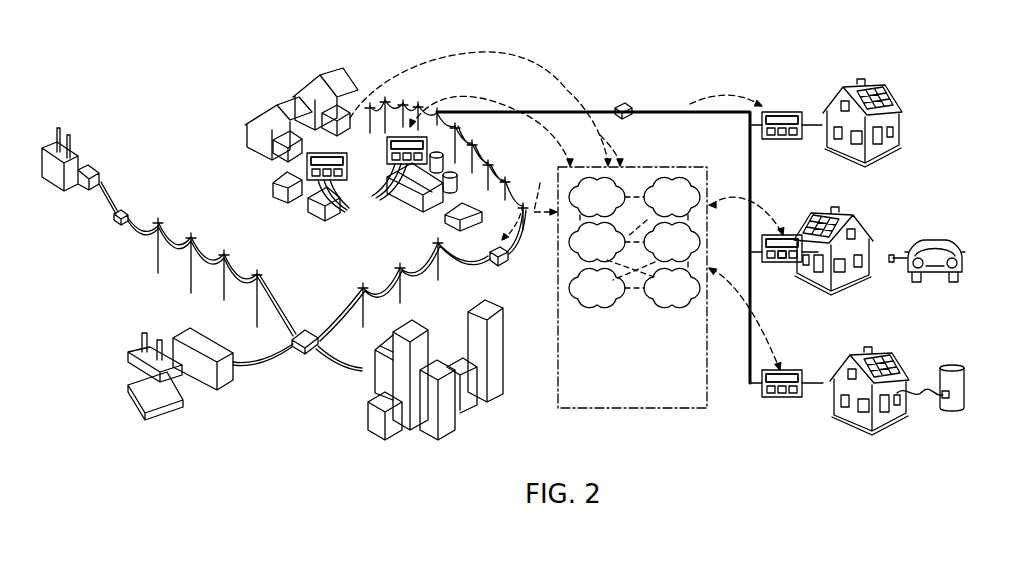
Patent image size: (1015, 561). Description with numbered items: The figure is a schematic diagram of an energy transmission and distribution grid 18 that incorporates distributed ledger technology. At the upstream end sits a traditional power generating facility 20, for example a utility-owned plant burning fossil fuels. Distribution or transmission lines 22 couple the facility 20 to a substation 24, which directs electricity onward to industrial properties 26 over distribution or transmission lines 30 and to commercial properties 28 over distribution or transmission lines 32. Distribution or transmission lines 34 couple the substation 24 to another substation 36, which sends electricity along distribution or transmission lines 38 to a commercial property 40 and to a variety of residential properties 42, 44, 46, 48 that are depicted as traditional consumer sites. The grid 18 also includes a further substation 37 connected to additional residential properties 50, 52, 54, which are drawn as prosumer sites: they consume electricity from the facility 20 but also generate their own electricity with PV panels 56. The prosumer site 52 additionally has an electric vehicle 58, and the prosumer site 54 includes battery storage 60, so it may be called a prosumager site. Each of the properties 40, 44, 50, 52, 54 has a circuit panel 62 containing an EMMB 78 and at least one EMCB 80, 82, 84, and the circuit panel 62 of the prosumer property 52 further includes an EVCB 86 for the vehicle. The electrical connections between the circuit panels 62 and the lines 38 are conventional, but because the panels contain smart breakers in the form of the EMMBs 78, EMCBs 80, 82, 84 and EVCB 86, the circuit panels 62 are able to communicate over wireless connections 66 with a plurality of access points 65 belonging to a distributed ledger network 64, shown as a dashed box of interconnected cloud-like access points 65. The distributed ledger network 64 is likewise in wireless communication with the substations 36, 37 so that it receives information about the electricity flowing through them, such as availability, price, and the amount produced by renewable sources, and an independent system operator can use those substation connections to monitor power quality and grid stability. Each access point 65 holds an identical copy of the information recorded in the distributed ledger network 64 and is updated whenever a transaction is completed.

The energy transmission and distribution grid 18 is at (192, 82).
The power generating facility 20 is at (80, 156).
The distribution or transmission lines 22 is at (177, 228).
The substation 24 is at (311, 355).
The industrial properties 26 is at (198, 403).
The commercial properties 28 is at (410, 440).
The distribution or transmission lines 30 is at (263, 370).
The distribution or transmission lines 32 is at (340, 372).
The distribution or transmission lines 34 is at (385, 268).
The substation 36 is at (508, 258).
The substation 37 is at (634, 115).
The distribution or transmission lines 38 is at (487, 143).
The commercial property 40 is at (402, 211).
The residential property 42 is at (310, 221).
The residential property 44 is at (282, 201).
The residential property 46 is at (260, 118).
The residential property 48 is at (307, 90).
The residential property 50 is at (900, 132).
The residential property 52 is at (897, 222).
The residential property 54 is at (873, 417).
The PV panels 56 is at (893, 97).
The electric vehicle 58 is at (937, 242).
The battery storage 60 is at (957, 365).
The circuit panel 62 is at (386, 142).
The distributed ledger network 64 is at (571, 310).
The access points 65 is at (589, 206).
The wireless connections 66 is at (600, 135).
The EMMB 78 is at (331, 149).
The EMCB 80 is at (770, 397).
The EMCB 82 is at (750, 252).
The EMCB 84 is at (796, 139).
The EVCB 86 is at (782, 262).